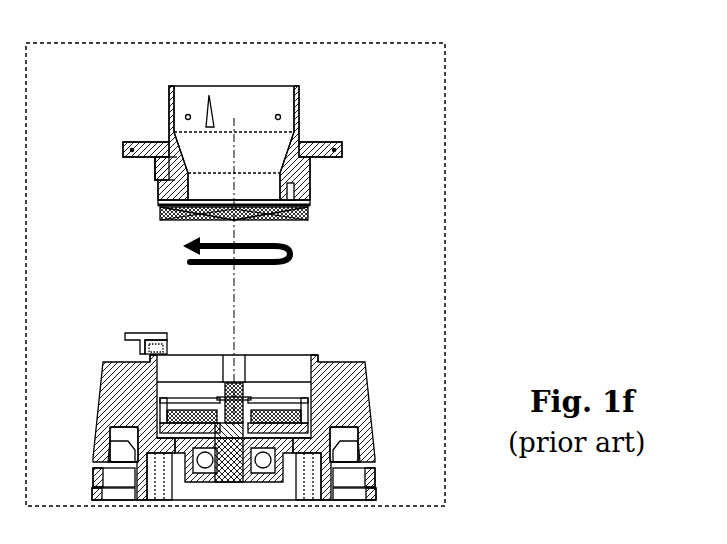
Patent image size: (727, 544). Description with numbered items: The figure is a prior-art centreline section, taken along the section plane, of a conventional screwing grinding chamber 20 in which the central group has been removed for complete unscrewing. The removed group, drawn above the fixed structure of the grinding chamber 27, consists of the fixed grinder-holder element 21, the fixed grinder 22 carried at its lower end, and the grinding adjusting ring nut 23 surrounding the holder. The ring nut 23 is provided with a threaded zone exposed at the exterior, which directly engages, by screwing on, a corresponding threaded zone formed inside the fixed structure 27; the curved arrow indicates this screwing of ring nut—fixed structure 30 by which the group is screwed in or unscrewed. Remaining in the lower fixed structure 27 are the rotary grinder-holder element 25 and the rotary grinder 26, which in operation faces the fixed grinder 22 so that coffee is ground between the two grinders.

The screwing grinding chamber 20 is at (446, 43).
The fixed grinder-holder element 21 is at (302, 88).
The fixed grinder 22 is at (160, 218).
The grinding adjusting ring nut 23 is at (319, 143).
The rotary grinder-holder element 25 is at (259, 407).
The rotary grinder 26 is at (308, 337).
The fixed structure of the grinding chamber 27 is at (342, 383).
The screwing of ring nut—fixed structure 30 is at (184, 248).